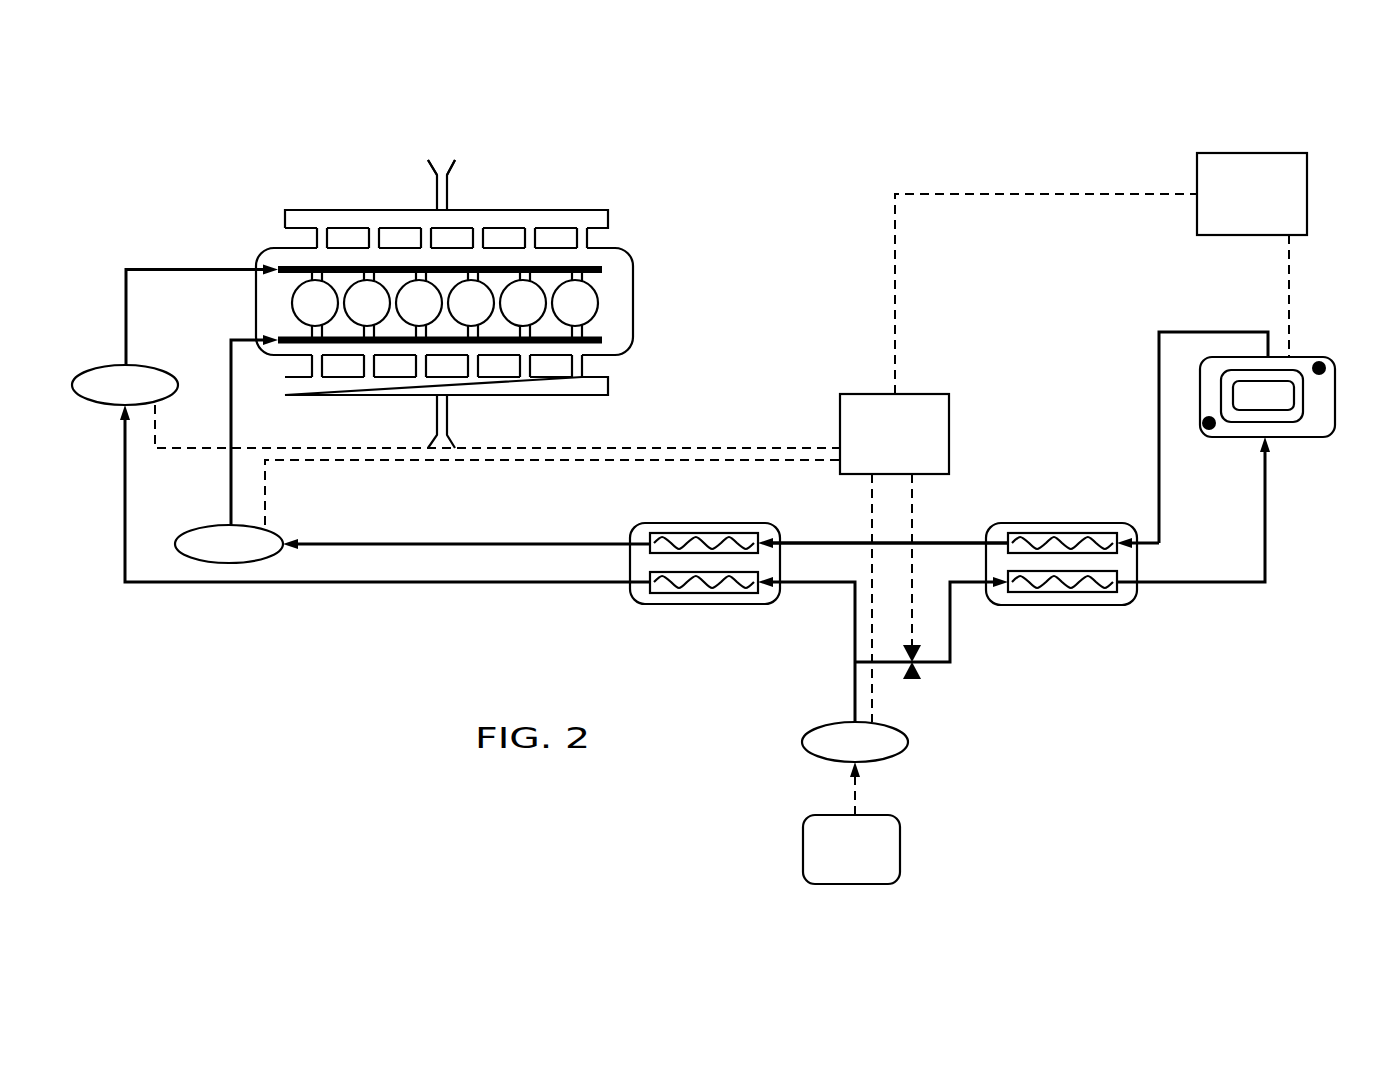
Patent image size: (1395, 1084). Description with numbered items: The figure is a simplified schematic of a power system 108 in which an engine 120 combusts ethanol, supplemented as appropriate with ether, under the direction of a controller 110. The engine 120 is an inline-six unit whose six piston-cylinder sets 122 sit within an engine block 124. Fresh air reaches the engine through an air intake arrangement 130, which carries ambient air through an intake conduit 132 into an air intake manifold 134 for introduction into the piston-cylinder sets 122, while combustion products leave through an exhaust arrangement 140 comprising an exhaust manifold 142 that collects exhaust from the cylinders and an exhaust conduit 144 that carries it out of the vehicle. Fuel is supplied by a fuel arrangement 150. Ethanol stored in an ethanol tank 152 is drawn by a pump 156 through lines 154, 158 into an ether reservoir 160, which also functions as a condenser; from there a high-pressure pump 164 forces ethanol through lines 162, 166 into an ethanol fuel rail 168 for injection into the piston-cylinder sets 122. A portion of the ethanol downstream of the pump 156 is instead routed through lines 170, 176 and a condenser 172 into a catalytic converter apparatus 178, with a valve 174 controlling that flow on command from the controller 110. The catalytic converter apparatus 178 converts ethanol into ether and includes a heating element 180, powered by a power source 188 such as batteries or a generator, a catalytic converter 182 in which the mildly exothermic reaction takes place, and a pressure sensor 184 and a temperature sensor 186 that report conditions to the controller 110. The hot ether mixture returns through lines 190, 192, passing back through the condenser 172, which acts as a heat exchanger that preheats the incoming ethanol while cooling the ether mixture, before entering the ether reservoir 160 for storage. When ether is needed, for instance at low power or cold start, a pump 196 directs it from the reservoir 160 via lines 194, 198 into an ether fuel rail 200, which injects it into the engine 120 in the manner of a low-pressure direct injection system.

The power system 108 is at (178, 184).
The controller 110 is at (949, 435).
The engine 120 is at (632, 248).
The piston-cylinder sets 122 is at (615, 290).
The engine block 124 is at (594, 304).
The air intake arrangement 130 is at (448, 186).
The intake conduit 132 is at (436, 186).
The air intake manifold 134 is at (335, 210).
The exhaust arrangement 140 is at (636, 390).
The exhaust manifold 142 is at (562, 398).
The exhaust conduit 144 is at (448, 415).
The fuel arrangement 150 is at (632, 645).
The ethanol tank 152 is at (900, 850).
The line 154 is at (858, 795).
The pump 156 is at (908, 742).
The line 158 is at (855, 625).
The ether reservoir 160 is at (707, 604).
The line 162 is at (395, 582).
The pump 164 is at (93, 405).
The line 166 is at (120, 266).
The ethanol fuel rail 168 is at (272, 258).
The line 170 is at (950, 640).
The condenser 172 is at (1062, 605).
The valve 174 is at (915, 680).
The line 176 is at (1262, 598).
The catalytic converter apparatus 178 is at (1302, 440).
The heating element 180 is at (1303, 398).
The catalytic converter 182 is at (1243, 413).
The pressure sensor 184 is at (1207, 430).
The temperature sensor 186 is at (1322, 362).
The power source 188 is at (1252, 153).
The line 190 is at (1178, 332).
The line 192 is at (818, 543).
The line 194 is at (395, 543).
The pump 196 is at (216, 525).
The line 198 is at (231, 405).
The ether fuel rail 200 is at (625, 352).